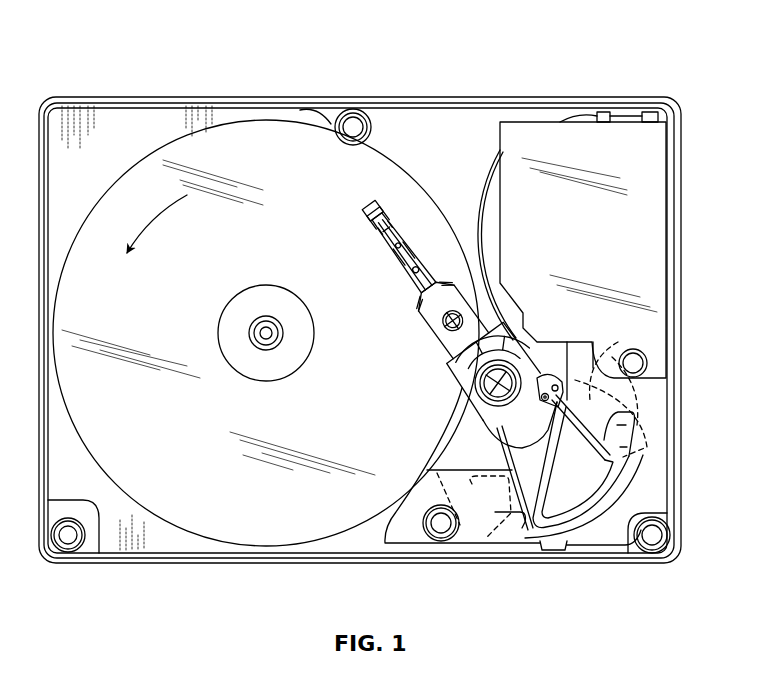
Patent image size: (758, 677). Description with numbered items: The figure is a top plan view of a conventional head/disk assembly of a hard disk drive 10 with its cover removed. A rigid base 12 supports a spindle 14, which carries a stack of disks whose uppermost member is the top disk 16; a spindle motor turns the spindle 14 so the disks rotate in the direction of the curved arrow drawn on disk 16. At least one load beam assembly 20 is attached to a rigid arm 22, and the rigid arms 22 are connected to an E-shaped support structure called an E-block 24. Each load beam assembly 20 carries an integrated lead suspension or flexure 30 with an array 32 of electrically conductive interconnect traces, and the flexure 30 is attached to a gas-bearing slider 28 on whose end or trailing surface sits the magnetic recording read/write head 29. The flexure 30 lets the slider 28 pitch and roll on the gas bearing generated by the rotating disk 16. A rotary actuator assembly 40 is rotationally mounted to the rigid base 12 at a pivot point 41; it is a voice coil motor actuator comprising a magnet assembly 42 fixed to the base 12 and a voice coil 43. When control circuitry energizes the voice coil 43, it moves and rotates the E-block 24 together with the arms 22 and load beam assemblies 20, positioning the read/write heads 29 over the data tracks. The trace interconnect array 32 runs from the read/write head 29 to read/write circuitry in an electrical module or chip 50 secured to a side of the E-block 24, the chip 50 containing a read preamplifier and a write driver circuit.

The disk drive 10 is at (100, 42).
The rigid base 12 is at (170, 566).
The spindle 14 is at (268, 285).
The top disk 16 is at (263, 525).
The load beam assembly 20 is at (423, 313).
The rigid arm 22 is at (440, 330).
The E-block 24 is at (458, 375).
The gas-bearing slider 28 is at (398, 205).
The magnetic recording read/write head 29 is at (376, 208).
The flexure 30 is at (393, 221).
The array of interconnect traces 32 is at (408, 248).
The rotary actuator assembly 40 is at (455, 442).
The pivot point 41 is at (480, 394).
The magnet assembly 42 is at (605, 345).
The voice coil 43 is at (630, 458).
The electrical module or chip 50 is at (538, 347).